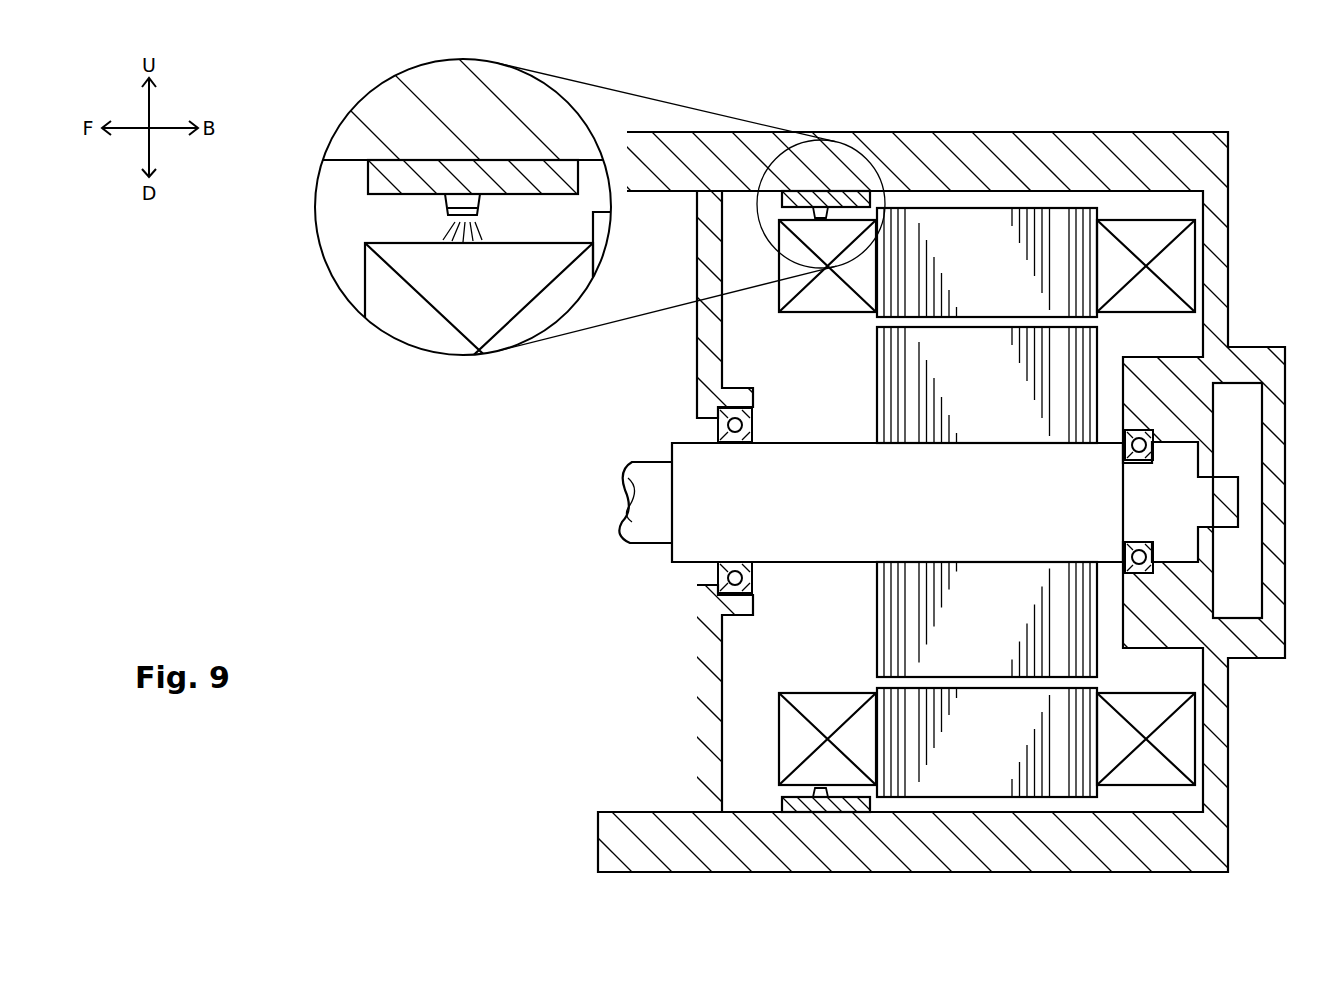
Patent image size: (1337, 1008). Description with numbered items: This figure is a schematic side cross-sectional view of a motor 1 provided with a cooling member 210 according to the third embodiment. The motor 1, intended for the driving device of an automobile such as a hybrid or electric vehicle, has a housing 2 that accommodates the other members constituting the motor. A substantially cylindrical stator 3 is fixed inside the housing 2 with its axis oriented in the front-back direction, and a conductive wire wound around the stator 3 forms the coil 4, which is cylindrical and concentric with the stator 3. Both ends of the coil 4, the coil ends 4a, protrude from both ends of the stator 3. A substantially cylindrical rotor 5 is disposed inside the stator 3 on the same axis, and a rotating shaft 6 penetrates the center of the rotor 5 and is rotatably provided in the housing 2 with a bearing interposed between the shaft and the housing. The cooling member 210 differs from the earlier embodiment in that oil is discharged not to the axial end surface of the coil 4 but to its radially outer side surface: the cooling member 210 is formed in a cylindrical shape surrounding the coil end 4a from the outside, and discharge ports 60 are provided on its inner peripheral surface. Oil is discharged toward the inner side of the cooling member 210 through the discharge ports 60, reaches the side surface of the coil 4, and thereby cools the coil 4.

The motor 1 is at (1238, 104).
The housing 2 is at (1077, 126).
The stator 3 is at (973, 220).
The coil 4 is at (790, 430).
The coil end 4a is at (1172, 232).
The rotor 5 is at (880, 646).
The rotating shaft 6 is at (690, 548).
The discharge port 60 is at (493, 223).
The cooling member 210 is at (832, 192).